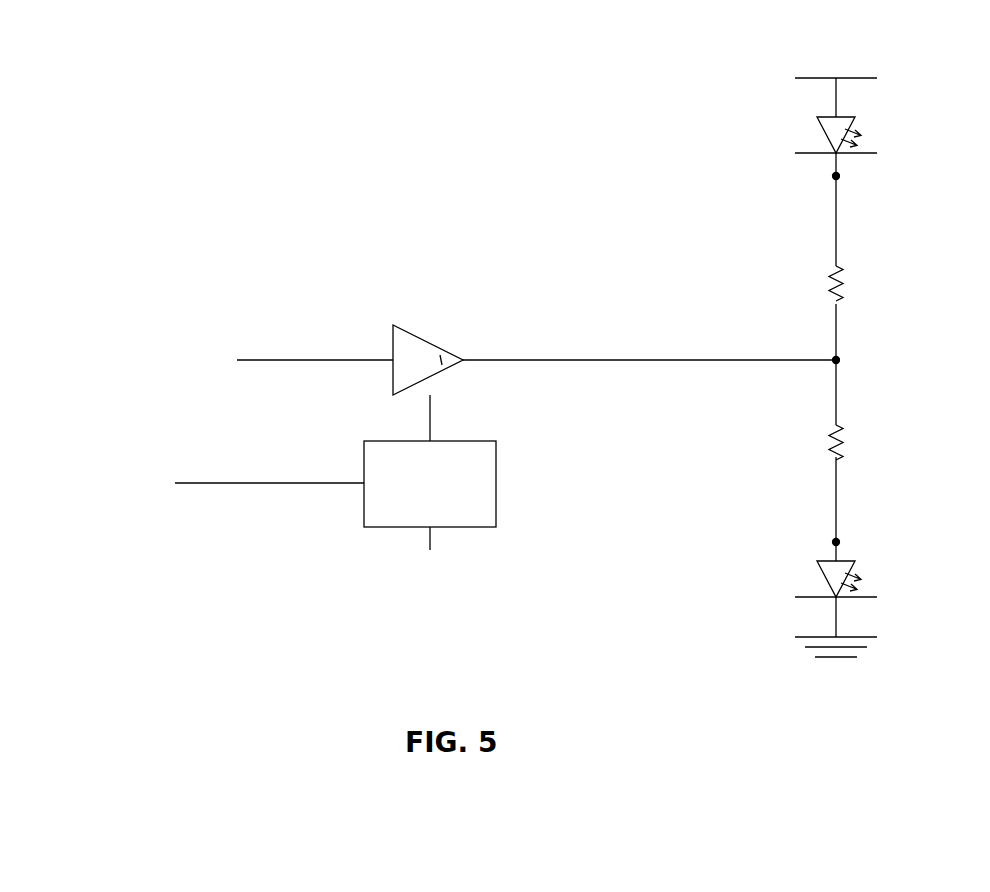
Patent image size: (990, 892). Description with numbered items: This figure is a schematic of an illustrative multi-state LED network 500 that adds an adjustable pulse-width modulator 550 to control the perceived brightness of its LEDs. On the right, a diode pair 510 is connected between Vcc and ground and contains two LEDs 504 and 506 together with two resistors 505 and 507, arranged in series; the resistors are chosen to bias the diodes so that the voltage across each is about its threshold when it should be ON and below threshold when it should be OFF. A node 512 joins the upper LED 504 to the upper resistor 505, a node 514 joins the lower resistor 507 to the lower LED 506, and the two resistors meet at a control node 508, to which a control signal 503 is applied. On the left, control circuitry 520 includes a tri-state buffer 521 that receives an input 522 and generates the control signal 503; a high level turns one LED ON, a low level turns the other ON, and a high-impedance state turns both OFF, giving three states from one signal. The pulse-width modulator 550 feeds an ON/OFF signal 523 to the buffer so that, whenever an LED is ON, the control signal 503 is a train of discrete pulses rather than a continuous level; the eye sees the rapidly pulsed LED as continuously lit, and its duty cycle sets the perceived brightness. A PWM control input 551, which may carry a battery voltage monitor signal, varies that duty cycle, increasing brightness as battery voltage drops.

The multi-state LED network 500 is at (93, 34).
The diode pair 510 is at (902, 70).
The LED 504 is at (848, 133).
The node between first LED and first resistor 512 is at (832, 175).
The first resistor 505 is at (845, 280).
The control node 508 is at (859, 361).
The second resistor 507 is at (845, 437).
The node between second resistor and second LED 514 is at (832, 540).
The LED 506 is at (846, 557).
The control circuitry 520 is at (393, 312).
The amplifier output 521 is at (441, 345).
The input signal 522 is at (315, 348).
The control signal 503 is at (649, 348).
The pulse-width modulator 550 is at (497, 483).
The PWM control input 551 is at (269, 470).
The ON/OFF signal 523 is at (430, 553).